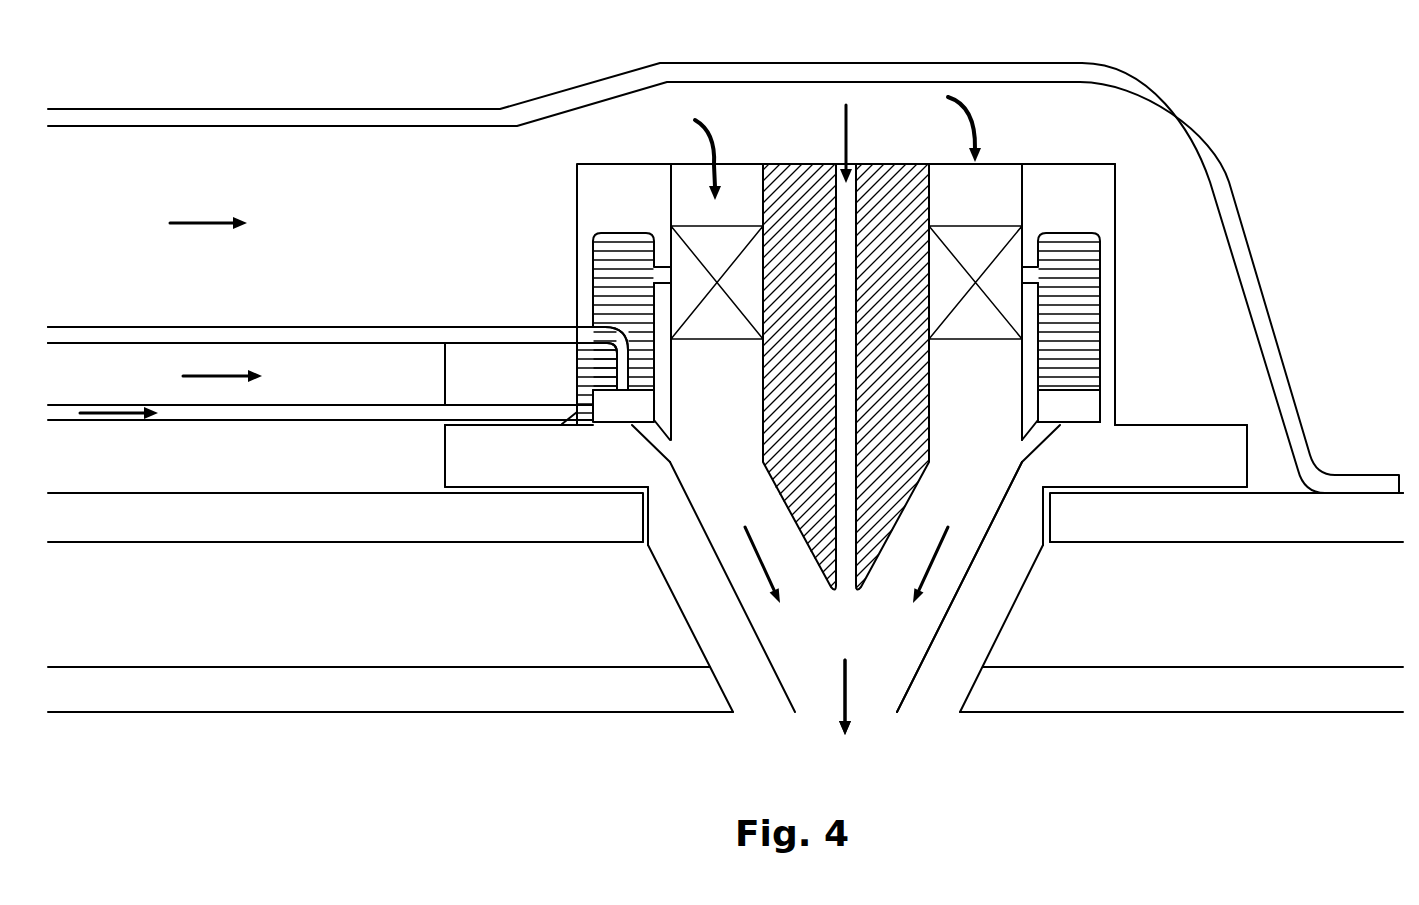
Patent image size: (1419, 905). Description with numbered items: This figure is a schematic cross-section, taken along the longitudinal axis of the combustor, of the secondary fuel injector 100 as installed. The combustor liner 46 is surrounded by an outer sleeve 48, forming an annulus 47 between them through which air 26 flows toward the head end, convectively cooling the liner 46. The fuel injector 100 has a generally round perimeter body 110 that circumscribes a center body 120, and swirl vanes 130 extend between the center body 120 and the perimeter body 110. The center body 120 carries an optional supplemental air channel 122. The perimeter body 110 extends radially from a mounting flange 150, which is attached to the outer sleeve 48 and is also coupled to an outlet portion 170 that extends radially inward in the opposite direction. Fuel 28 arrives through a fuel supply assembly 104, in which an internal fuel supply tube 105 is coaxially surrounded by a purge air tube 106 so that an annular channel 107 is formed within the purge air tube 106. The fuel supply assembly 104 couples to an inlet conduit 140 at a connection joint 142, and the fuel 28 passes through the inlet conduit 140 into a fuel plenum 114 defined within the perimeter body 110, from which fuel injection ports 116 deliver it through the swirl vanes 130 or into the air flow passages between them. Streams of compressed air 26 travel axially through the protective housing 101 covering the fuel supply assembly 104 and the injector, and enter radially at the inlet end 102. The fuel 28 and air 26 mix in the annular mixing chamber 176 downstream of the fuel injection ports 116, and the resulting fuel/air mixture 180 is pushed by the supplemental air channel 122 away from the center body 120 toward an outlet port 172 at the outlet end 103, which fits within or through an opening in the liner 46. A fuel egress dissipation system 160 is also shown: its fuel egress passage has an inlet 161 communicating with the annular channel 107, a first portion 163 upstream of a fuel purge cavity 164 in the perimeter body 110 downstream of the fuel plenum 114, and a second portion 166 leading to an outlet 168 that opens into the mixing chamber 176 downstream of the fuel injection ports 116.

The air 26 is at (200, 218).
The fuel 28 is at (200, 372).
The liner 46 is at (295, 687).
The annulus 47 is at (389, 618).
The outer sleeve 48 is at (267, 523).
The fuel injector 100 is at (1151, 203).
The protective housing 101 is at (1270, 316).
The inlet end 102 is at (546, 129).
The outlet end 103 is at (950, 732).
The fuel supply assembly 104 is at (358, 309).
The fuel supply tube 105 is at (128, 341).
The purge air tube 106 is at (210, 327).
The annular channel 107 is at (193, 412).
The perimeter body 110 is at (1135, 279).
The fuel plenum 114 is at (630, 233).
The fuel injection ports 116 is at (660, 270).
The center body 120 is at (822, 361).
The supplemental air channel 122 is at (843, 203).
The swirl vanes 130 is at (957, 235).
The inlet conduit 140 is at (453, 341).
The connection joint 142 is at (443, 378).
The mounting flange 150 is at (445, 455).
The fuel egress dissipation system 160 is at (1085, 405).
The inlet 161 is at (585, 330).
The first portion 163 is at (620, 372).
The fuel purge cavity 164 is at (660, 405).
The second portion 166 is at (655, 452).
The outlet 168 is at (672, 450).
The outlet portion 170 is at (990, 607).
The outlet port 172 is at (800, 700).
The mixing chamber 176 is at (864, 643).
The fuel/air mixture 180 is at (880, 735).